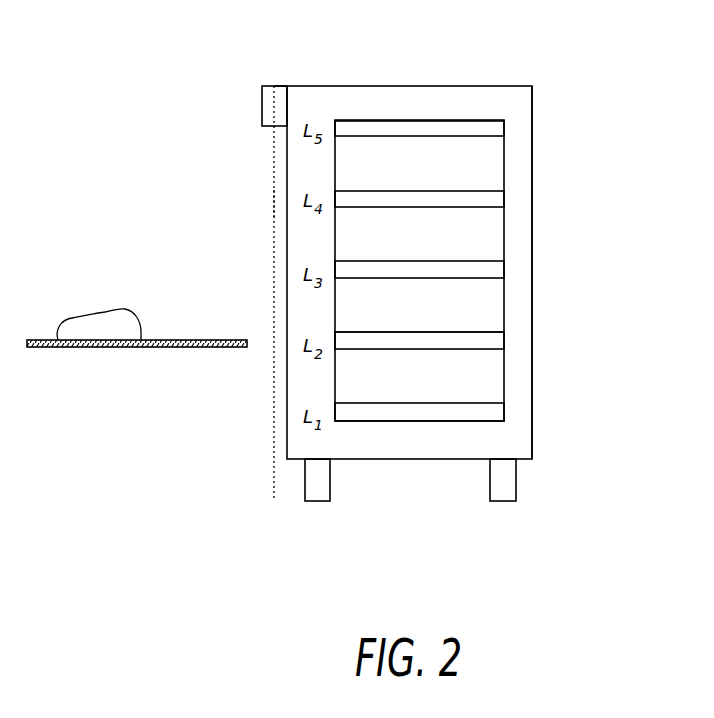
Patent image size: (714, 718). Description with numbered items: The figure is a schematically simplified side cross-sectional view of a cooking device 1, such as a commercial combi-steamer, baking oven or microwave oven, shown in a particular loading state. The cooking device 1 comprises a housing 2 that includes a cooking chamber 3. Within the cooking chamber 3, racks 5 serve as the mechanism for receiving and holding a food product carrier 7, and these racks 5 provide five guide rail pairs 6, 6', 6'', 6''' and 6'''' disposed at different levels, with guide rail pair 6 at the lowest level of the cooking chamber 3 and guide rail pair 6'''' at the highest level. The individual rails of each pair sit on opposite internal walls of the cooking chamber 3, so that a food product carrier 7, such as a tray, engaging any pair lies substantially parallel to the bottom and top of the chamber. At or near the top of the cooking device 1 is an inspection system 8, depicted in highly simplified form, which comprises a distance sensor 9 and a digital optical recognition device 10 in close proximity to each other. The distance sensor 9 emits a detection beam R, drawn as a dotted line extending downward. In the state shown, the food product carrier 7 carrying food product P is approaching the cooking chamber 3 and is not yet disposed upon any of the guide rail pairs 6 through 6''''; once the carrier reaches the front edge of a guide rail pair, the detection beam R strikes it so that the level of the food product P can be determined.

The cooking device 1 is at (556, 159).
The housing 2 is at (532, 245).
The cooking chamber 3 is at (419, 248).
The racks 5 is at (477, 338).
The guide rail pair 6 is at (471, 411).
The guide rail pair 6' is at (474, 340).
The guide rail pair 6'' is at (476, 269).
The guide rail pair 6''' is at (478, 196).
The guide rail pair 6'''' is at (480, 119).
The food product carrier 7 is at (185, 348).
The inspection system 8 is at (273, 82).
The distance sensor 9 is at (280, 88).
The digital optical recognition device 10 is at (266, 112).
The food product P is at (62, 333).
The detection beam R is at (273, 205).